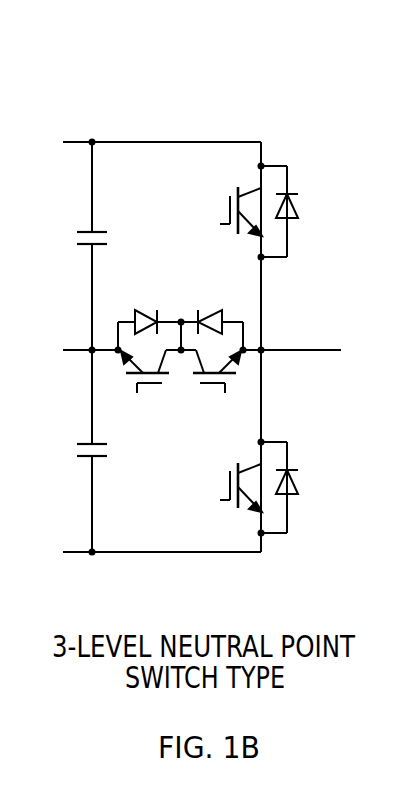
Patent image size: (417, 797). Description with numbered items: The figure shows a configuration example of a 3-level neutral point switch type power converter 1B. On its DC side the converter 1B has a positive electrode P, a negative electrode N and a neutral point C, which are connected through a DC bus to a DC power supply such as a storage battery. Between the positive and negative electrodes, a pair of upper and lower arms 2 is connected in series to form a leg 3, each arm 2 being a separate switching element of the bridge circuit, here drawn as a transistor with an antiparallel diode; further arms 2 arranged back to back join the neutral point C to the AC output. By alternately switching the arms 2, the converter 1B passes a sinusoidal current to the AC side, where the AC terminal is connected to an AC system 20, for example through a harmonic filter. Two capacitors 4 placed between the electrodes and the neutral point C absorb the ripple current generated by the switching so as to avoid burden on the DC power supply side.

The 3-level neutral point switch type power converter 1B is at (160, 116).
The arm 2 is at (299, 206).
The leg 3 is at (272, 557).
The capacitor 4 is at (68, 238).
The AC system 20 is at (357, 330).